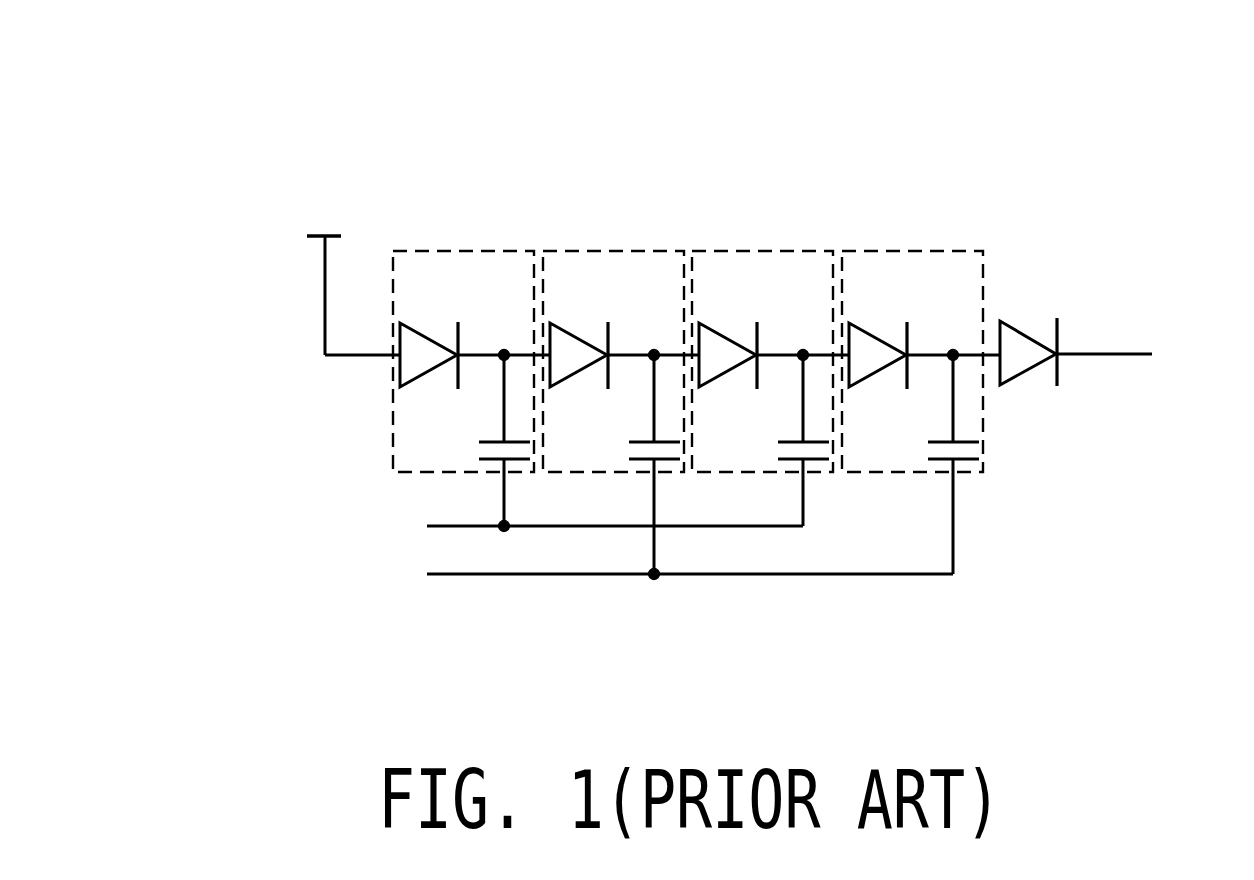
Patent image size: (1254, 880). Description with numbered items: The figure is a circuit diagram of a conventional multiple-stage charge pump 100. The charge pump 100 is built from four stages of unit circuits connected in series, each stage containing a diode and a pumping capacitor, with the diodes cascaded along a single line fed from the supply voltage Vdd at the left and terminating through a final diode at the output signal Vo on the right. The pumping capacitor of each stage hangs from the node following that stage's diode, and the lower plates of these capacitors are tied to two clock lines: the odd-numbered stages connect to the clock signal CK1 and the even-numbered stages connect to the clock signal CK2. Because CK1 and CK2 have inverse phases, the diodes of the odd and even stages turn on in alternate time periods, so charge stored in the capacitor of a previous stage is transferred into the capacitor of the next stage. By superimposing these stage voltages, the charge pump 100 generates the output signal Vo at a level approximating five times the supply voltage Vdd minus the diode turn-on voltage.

The multiple-stage charge pump 100 is at (130, 69).
The supply voltage Vdd is at (345, 267).
The output signal Vo is at (1128, 349).
The clock signal CK1 is at (576, 526).
The clock signal CK2 is at (651, 574).